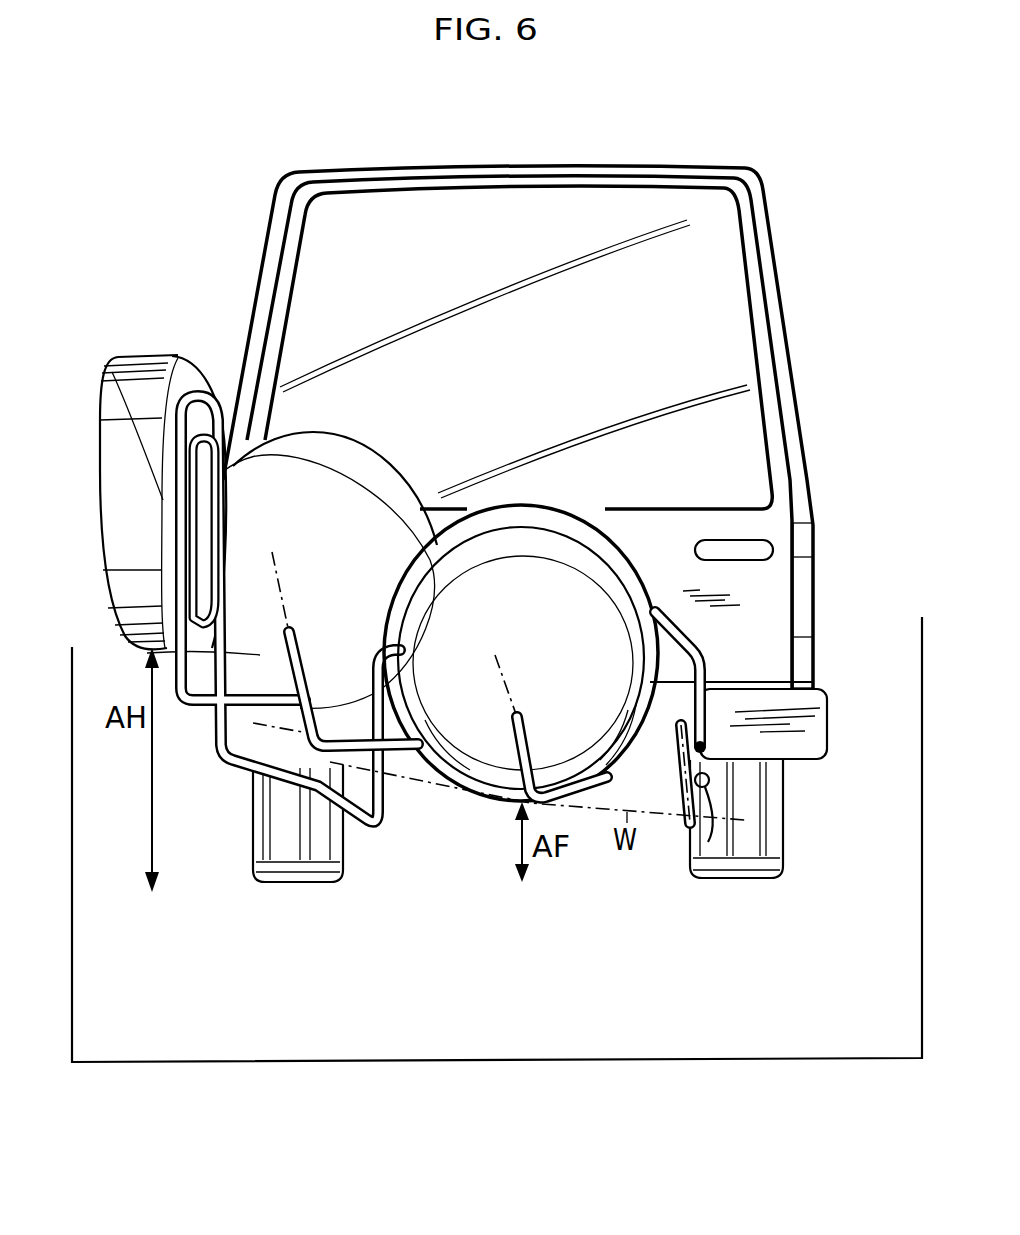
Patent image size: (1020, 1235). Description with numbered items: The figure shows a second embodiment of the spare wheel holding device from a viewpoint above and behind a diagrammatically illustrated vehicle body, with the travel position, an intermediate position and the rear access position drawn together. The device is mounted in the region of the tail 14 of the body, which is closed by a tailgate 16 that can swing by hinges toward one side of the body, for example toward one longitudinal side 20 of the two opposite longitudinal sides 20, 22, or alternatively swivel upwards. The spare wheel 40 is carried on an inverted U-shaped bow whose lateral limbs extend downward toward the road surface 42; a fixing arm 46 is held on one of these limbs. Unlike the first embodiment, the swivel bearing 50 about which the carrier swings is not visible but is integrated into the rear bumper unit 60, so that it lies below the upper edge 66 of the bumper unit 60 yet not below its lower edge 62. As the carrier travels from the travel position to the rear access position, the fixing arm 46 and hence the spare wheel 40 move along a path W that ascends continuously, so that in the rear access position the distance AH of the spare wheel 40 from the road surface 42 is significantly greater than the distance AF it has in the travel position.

The tail 14 is at (800, 439).
The tailgate 16 is at (732, 279).
The longitudinal side 20 is at (262, 268).
The longitudinal side 22 is at (793, 350).
The spare wheel 40 is at (515, 542).
The road surface 42 is at (518, 1029).
The fixing arm 46 is at (703, 789).
The swivel bearing 50 is at (315, 797).
The bumper unit 60 is at (810, 736).
The lower edge 62 is at (779, 765).
The upper edge 66 is at (773, 682).